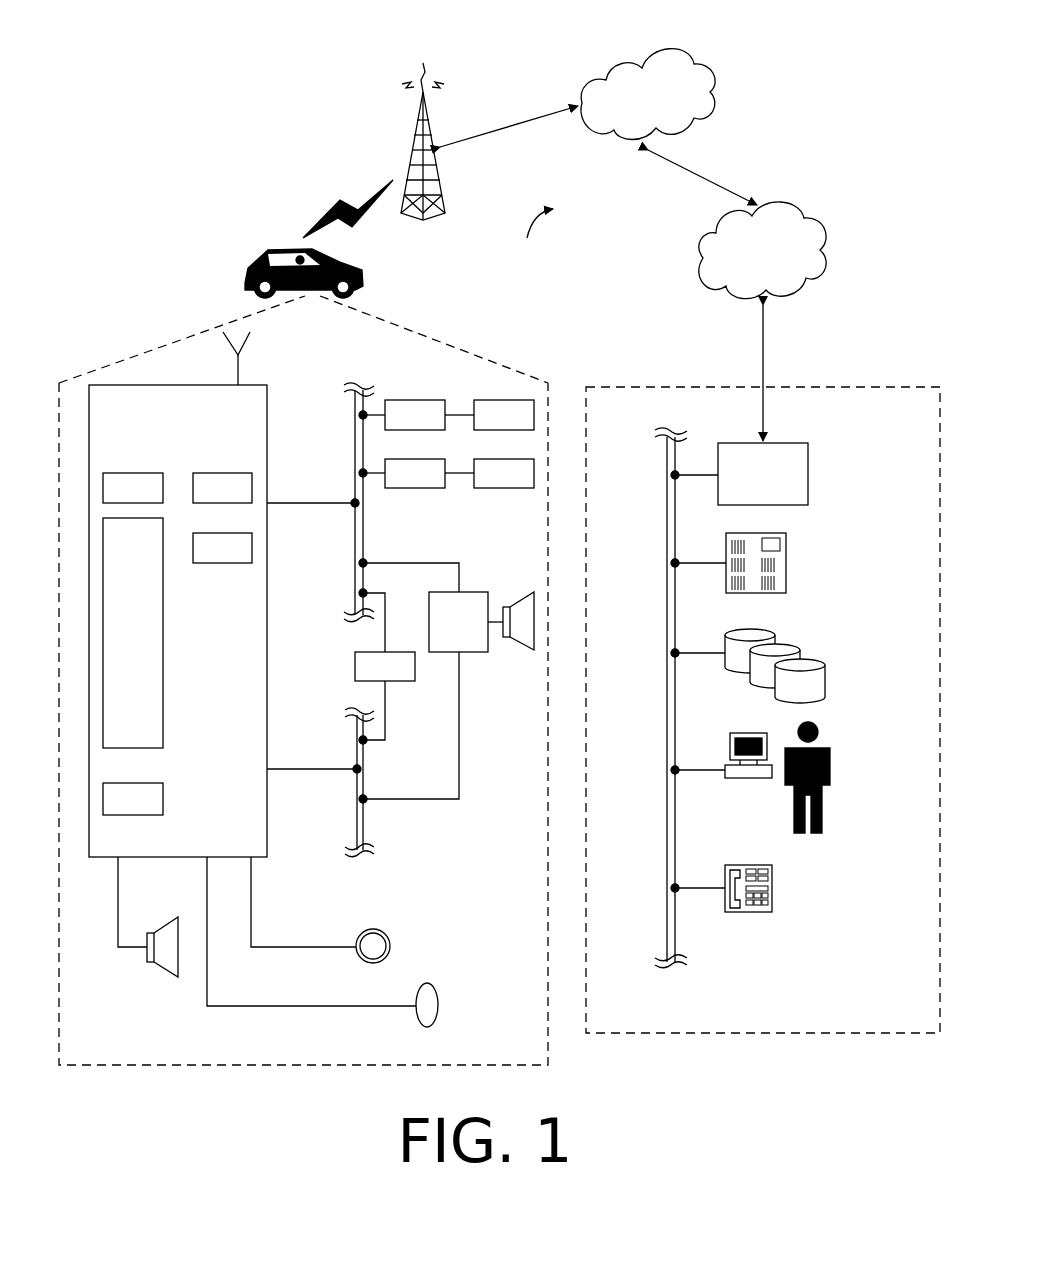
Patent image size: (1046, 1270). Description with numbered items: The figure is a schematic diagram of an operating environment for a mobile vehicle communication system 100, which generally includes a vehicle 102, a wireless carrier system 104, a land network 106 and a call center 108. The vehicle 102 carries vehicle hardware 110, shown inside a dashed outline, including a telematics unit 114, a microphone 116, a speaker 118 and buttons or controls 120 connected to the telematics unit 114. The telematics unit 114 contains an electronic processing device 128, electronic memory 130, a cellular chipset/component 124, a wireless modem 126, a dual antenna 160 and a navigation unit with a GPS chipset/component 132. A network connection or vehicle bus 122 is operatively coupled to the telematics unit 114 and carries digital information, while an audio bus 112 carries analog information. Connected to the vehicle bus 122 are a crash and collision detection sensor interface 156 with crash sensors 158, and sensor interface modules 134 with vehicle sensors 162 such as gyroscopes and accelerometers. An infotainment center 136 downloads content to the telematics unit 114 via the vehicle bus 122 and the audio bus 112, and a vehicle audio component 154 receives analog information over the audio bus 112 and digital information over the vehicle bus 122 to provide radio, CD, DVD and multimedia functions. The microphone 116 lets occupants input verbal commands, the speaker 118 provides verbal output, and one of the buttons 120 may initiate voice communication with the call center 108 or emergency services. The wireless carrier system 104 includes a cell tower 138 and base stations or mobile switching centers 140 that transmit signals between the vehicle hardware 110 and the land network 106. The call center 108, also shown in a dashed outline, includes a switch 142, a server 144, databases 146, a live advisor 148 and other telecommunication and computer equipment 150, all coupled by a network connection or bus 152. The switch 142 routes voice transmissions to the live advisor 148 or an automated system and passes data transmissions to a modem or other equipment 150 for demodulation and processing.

The communication system 100 is at (442, 32).
The vehicle 102 is at (250, 265).
The wireless carrier system 104 is at (528, 237).
The land network 106 is at (762, 321).
The call center 108 is at (763, 1033).
The vehicle hardware 110 is at (265, 1065).
The audio bus 112 is at (355, 820).
The telematics unit 114 is at (267, 700).
The microphone 116 is at (430, 982).
The speaker 118 is at (157, 968).
The buttons or controls 120 is at (370, 930).
The vehicle bus 122 is at (363, 548).
The cellular chipset/component 124 is at (133, 488).
The wireless modem 126 is at (222, 488).
The electronic processing device 128 is at (133, 633).
The electronic memory 130 is at (133, 799).
The GPS chipset/component 132 is at (222, 548).
The sensor interface modules 134 is at (429, 473).
The infotainment center 136 is at (385, 696).
The cell tower 138 is at (430, 120).
The base stations and/or mobile switching centers 140 is at (669, 127).
The switch 142 is at (763, 474).
The server 144 is at (786, 555).
The databases 146 is at (830, 672).
The live advisor 148 is at (822, 742).
The telecommunication and computer equipment 150 is at (772, 878).
The network connection or bus 152 is at (667, 700).
The vehicle audio component 154 is at (448, 695).
The crash and/or collision detection sensor interface 156 is at (429, 415).
The crash sensors 158 is at (504, 415).
The dual antenna 160 is at (245, 382).
The vehicle sensors 162 is at (504, 473).